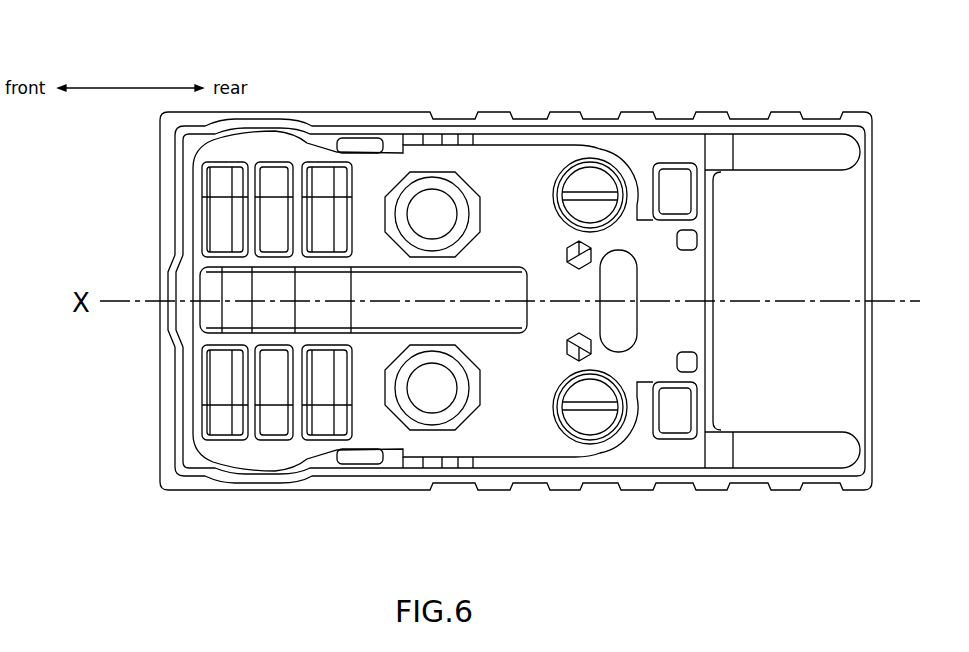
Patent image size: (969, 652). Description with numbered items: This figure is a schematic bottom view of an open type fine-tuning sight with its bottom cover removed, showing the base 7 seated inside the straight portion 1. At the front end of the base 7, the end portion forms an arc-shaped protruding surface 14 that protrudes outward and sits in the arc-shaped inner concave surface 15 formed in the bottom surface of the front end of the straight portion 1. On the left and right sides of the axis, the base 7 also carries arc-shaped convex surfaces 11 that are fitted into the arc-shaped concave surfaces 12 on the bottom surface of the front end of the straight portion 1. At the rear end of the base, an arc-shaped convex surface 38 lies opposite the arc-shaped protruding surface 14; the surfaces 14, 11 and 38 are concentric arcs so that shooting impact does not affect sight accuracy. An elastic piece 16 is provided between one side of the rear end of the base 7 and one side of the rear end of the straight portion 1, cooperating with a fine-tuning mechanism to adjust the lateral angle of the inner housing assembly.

The straight portion 1 is at (515, 125).
The base 7 is at (543, 152).
The arc-shaped convex surface 11 is at (310, 137).
The arc-shaped concave surface 12 is at (272, 126).
The arc-shaped protruding surface 14 is at (180, 313).
The arc-shaped inner concave surface 15 is at (172, 287).
The elastic piece 16 is at (553, 450).
The arc-shaped convex surface 38 is at (700, 302).